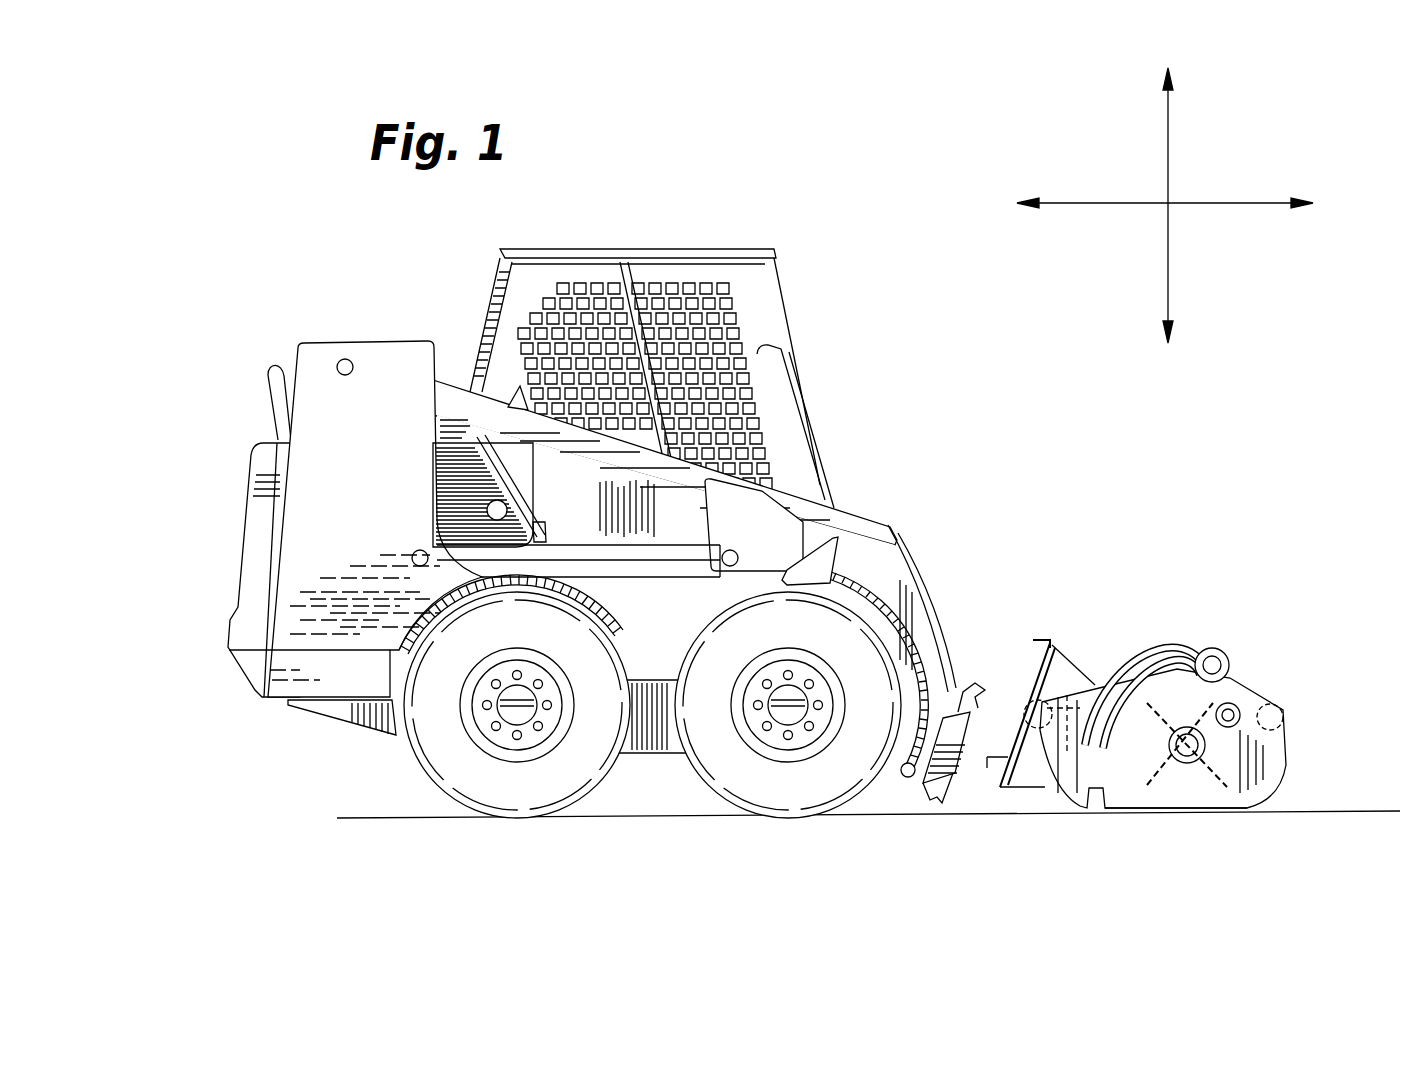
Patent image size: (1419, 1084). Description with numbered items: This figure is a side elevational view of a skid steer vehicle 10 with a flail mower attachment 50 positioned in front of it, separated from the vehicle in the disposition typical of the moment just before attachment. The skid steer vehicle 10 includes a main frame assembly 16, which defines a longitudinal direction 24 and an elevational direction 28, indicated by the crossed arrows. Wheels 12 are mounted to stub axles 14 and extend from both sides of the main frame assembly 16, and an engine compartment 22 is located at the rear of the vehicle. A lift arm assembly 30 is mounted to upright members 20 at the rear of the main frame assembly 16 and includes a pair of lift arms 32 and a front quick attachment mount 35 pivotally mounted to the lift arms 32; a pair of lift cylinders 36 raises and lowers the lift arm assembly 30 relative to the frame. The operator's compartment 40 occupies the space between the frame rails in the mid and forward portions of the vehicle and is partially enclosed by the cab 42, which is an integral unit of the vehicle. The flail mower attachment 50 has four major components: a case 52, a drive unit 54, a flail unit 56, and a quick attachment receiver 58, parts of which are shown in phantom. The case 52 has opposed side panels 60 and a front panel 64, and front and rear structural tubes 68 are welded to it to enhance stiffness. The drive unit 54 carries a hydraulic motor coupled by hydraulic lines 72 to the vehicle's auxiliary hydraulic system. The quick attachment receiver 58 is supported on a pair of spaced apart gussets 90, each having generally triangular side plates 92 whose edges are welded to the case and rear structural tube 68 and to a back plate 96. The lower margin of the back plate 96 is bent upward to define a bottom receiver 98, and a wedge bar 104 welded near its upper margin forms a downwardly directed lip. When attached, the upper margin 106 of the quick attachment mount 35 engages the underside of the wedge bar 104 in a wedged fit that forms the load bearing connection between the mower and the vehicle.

The skid steer vehicle 10 is at (606, 252).
The wheels 12 is at (437, 762).
The stub axles 14 is at (520, 735).
The main frame assembly 16 is at (650, 755).
The upright members 20 is at (330, 357).
The engine compartment 22 is at (260, 548).
The longitudinal direction 24 is at (1232, 205).
The elevational direction 28 is at (1170, 138).
The lift arm assembly 30 is at (828, 520).
The lift arms 32 is at (898, 534).
The quick attachment mount 35 is at (953, 775).
The lift cylinders 36 is at (678, 548).
The operator's compartment 40 is at (738, 313).
The cab 42 is at (492, 350).
The flail mower attachment 50 is at (1188, 697).
The case 52 is at (1133, 806).
The drive unit 54 is at (1280, 700).
The flail unit 56 is at (1196, 765).
The quick attachment receiver 58 is at (1030, 672).
The side panels 60 is at (1285, 763).
The front panel 64 is at (1290, 740).
The structural tubes 68 is at (1290, 700).
The hydraulic lines 72 is at (1220, 652).
The gussets 90 is at (1065, 682).
The side plates 92 is at (1140, 690).
The back plate 96 is at (1027, 700).
The bottom receiver 98 is at (995, 765).
The wedge bar 104 is at (1067, 670).
The upper margin 106 is at (960, 690).